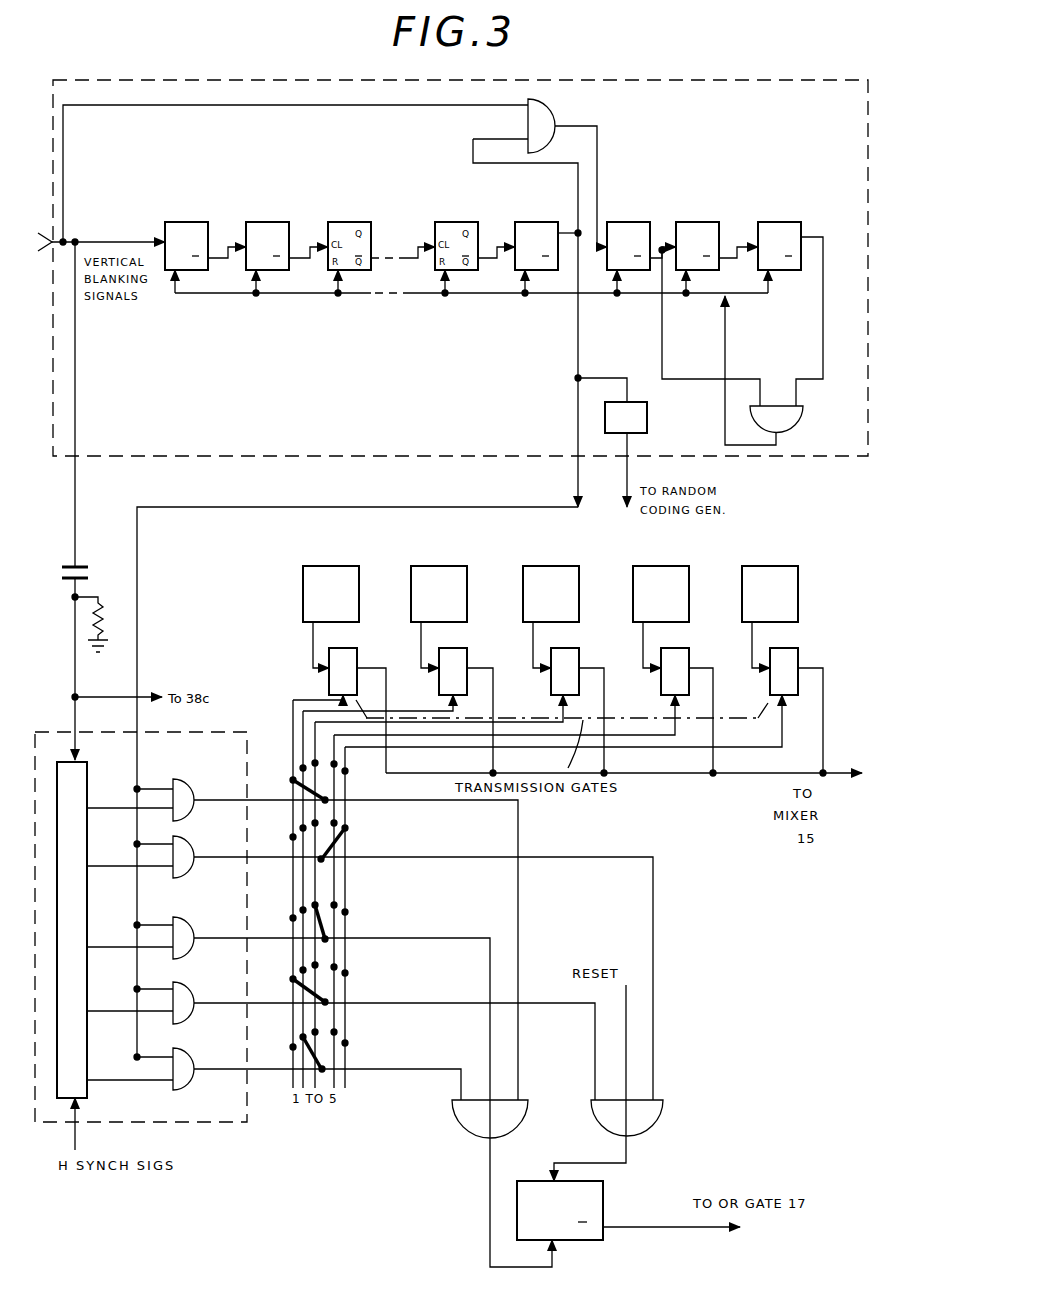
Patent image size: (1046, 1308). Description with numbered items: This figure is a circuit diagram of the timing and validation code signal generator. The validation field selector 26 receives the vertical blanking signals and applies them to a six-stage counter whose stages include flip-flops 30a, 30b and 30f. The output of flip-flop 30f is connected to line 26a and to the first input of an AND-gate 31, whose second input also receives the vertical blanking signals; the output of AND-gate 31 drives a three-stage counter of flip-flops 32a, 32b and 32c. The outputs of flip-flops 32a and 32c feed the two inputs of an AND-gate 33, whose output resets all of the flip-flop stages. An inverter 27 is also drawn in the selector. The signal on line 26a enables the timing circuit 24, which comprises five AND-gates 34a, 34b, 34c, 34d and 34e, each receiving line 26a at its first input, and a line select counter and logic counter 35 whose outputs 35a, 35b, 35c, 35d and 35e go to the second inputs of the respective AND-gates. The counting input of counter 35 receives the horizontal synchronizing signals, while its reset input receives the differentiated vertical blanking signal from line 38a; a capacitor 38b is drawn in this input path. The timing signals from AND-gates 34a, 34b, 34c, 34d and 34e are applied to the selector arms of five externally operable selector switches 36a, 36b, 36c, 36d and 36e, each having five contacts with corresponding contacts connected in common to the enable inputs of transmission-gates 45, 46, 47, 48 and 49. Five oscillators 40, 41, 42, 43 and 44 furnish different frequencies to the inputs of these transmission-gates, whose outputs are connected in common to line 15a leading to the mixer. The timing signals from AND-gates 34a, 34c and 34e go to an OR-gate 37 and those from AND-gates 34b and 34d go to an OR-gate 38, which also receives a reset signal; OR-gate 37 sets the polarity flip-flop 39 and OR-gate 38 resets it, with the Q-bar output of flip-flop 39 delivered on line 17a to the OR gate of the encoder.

The validation field selector 26 is at (815, 462).
The line 26a is at (372, 509).
The inverter 27 is at (649, 418).
The flip-flop 30a is at (188, 222).
The flip-flop 30b is at (268, 222).
The flip-flop 30f is at (547, 208).
The AND-gate 31 is at (550, 113).
The flip-flop 32a is at (629, 222).
The flip-flop 32b is at (698, 222).
The flip-flop 32c is at (778, 222).
The AND-gate 33 is at (794, 422).
The timing circuit 24 is at (247, 1098).
The line select counter and logic counter 35 is at (90, 770).
The output 35a is at (130, 796).
The output 35b is at (130, 854).
The output 35c is at (130, 935).
The output 35d is at (130, 999).
The output 35e is at (130, 1068).
The AND-gate 34a is at (205, 778).
The AND-gate 34b is at (207, 835).
The AND-gate 34c is at (205, 916).
The AND-gate 34d is at (205, 981).
The AND-gate 34e is at (205, 1047).
The selector switch 36a is at (355, 789).
The selector switch 36b is at (357, 845).
The selector switch 36c is at (353, 924).
The selector switch 36d is at (353, 987).
The selector switch 36e is at (353, 1053).
The line 38a is at (103, 622).
The capacitor 38b is at (82, 562).
The oscillator 40 is at (357, 548).
The oscillator 41 is at (465, 548).
The oscillator 42 is at (577, 548).
The oscillator 43 is at (687, 548).
The oscillator 44 is at (796, 548).
The transmission-gate 45 is at (376, 637).
The transmission-gate 46 is at (486, 637).
The transmission-gate 47 is at (598, 637).
The transmission-gate 48 is at (708, 637).
The transmission-gate 49 is at (801, 645).
The line 15a is at (668, 777).
The OR-gate 37 is at (470, 1132).
The OR-gate 38 is at (652, 1125).
The polarity flip-flop 39 is at (590, 1241).
The line 17a is at (662, 1213).